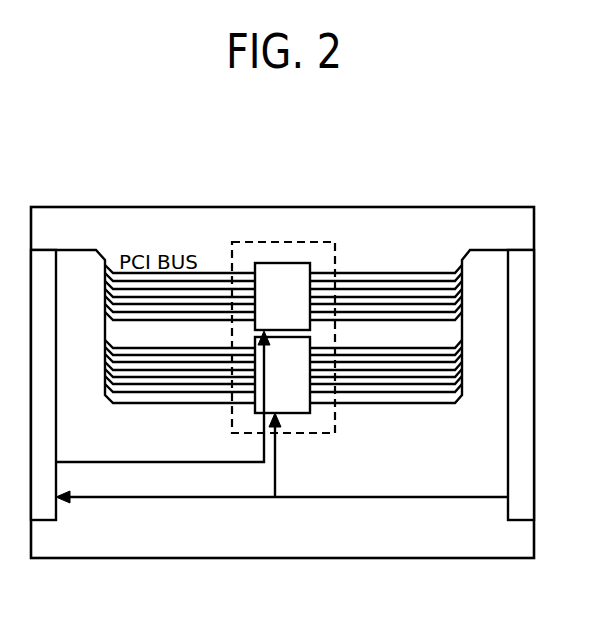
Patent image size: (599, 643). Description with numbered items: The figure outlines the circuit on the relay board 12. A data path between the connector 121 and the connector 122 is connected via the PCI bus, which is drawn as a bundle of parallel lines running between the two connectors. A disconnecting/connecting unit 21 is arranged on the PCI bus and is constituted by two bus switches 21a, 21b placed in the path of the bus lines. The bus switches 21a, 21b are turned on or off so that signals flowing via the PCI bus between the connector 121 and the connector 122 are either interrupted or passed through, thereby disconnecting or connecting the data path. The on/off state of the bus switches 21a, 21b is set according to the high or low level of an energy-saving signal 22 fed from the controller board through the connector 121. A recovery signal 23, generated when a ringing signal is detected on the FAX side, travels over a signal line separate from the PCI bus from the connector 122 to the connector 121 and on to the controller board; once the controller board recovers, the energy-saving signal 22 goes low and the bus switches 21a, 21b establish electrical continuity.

The relay board 12 is at (268, 206).
The disconnecting/connecting unit 21 is at (341, 257).
The bus switch 21a is at (302, 262).
The bus switch 21b is at (299, 414).
The energy-saving signal 22 is at (207, 409).
The recovery signal 23 is at (282, 469).
The connector 121 is at (46, 522).
The connector 122 is at (520, 522).